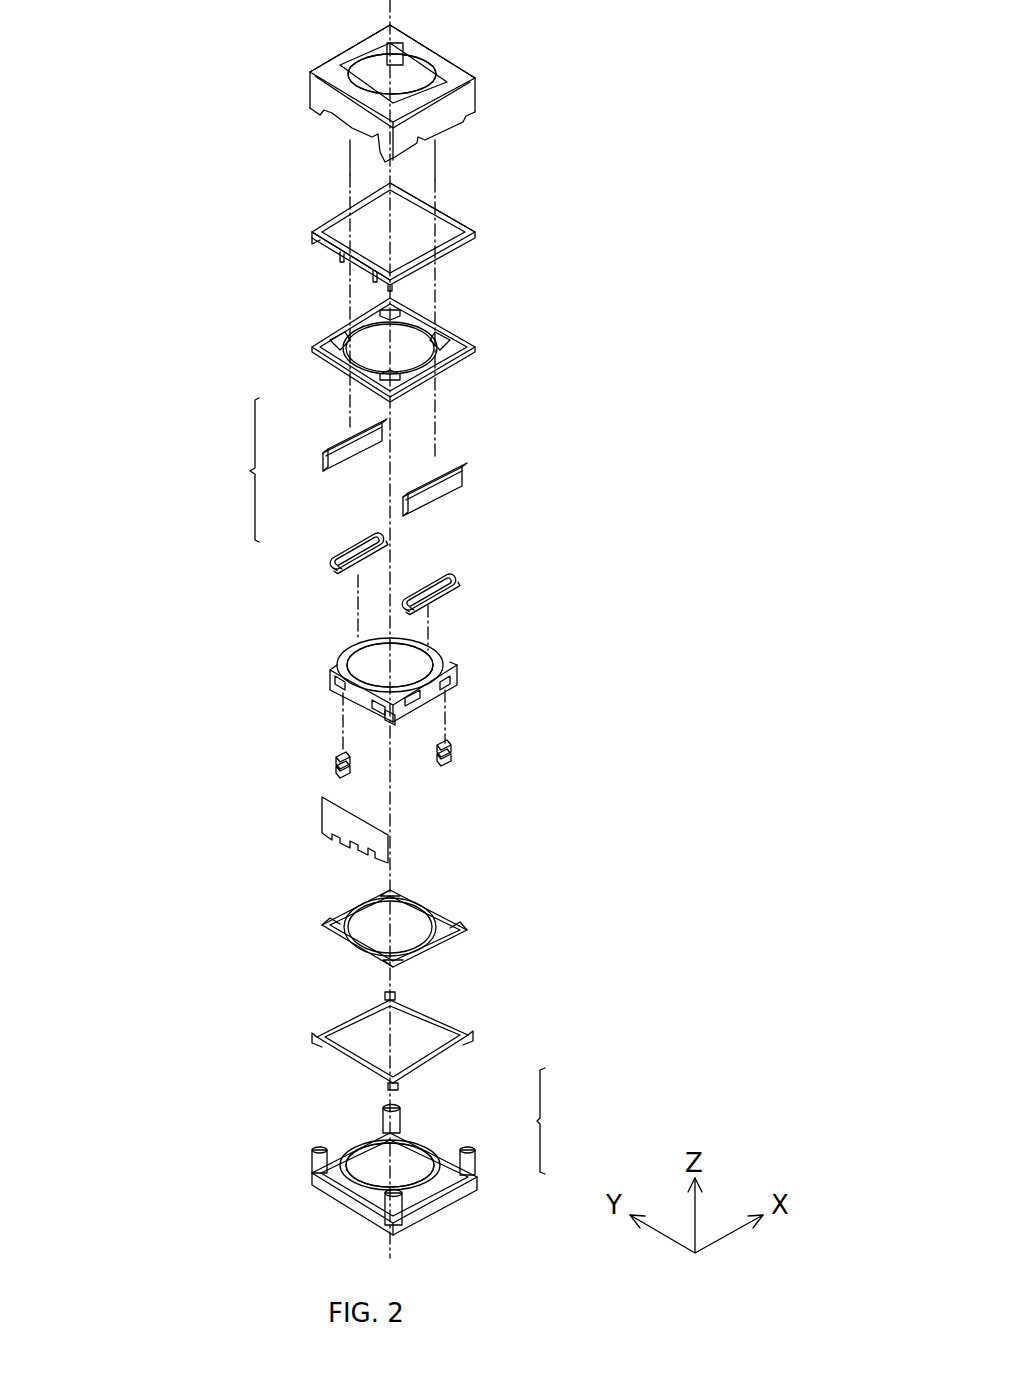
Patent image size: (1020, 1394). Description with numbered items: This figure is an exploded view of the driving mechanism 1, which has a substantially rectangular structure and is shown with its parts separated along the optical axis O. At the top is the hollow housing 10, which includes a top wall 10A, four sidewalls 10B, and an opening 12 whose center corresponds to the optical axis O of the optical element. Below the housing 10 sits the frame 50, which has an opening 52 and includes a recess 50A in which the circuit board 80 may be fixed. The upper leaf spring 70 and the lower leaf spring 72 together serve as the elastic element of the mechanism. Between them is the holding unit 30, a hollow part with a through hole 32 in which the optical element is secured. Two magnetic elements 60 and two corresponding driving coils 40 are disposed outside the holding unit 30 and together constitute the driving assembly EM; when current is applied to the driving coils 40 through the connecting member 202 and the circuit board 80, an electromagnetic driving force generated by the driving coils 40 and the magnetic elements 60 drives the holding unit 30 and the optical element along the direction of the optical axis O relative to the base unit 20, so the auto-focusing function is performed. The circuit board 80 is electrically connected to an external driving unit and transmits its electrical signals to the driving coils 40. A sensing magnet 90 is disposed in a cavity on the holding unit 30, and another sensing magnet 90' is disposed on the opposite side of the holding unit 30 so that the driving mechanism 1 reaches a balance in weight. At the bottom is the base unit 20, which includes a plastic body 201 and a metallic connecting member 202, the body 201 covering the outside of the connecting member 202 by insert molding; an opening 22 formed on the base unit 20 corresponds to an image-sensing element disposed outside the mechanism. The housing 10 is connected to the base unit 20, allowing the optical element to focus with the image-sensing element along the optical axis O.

The driving mechanism 1 is at (125, 100).
The optical axis O is at (392, 10).
The housing 10 is at (490, 105).
The top wall 10A is at (330, 78).
The sidewalls 10B is at (340, 58).
The opening 12 is at (427, 68).
The frame 50 is at (447, 252).
The recess 50A is at (337, 248).
The opening 52 is at (447, 230).
The upper leaf spring 70 is at (437, 367).
The driving assembly EM is at (226, 470).
The magnetic elements 60 is at (337, 435).
The driving coils 40 is at (337, 555).
The holding unit 30 is at (448, 688).
The through hole 32 is at (367, 678).
The sensing magnet 90 is at (307, 747).
The sensing magnet 90' is at (482, 770).
The circuit board 80 is at (322, 813).
The lower leaf spring 72 is at (447, 943).
The connecting member 202 is at (450, 1065).
The base unit 20 is at (559, 1121).
The body 201 is at (477, 1162).
The opening 22 is at (370, 1168).